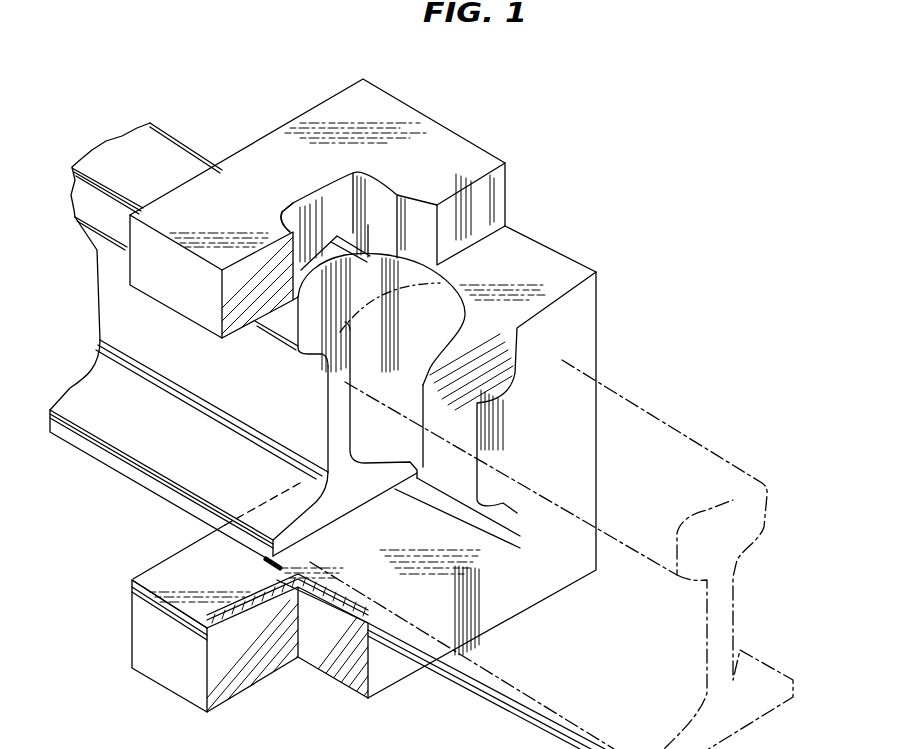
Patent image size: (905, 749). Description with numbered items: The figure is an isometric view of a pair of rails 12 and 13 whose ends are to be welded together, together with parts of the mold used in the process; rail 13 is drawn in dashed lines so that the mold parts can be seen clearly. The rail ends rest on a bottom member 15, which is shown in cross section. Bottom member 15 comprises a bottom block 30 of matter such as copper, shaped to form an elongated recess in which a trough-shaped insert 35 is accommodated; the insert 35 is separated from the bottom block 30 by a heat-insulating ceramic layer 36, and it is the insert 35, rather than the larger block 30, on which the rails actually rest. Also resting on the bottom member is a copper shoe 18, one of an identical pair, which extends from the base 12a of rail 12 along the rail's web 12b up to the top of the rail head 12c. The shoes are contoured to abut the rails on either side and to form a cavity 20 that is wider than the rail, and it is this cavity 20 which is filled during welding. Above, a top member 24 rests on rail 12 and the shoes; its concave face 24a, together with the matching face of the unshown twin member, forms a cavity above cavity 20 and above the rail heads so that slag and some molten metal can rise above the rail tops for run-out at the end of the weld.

The rail 12 is at (177, 138).
The base of rail 12a is at (297, 512).
The web of rail 12b is at (340, 410).
The rail head 12c is at (303, 332).
The rail 13 is at (693, 446).
The bottom member 15 is at (180, 690).
The copper shoe 18 is at (568, 360).
The cavity 20 is at (452, 284).
The top member 24 is at (460, 135).
The concave face 24a is at (326, 212).
The bottom block 30 is at (143, 653).
The trough-shaped insert 35 is at (147, 582).
The ceramic layer 36 is at (138, 598).